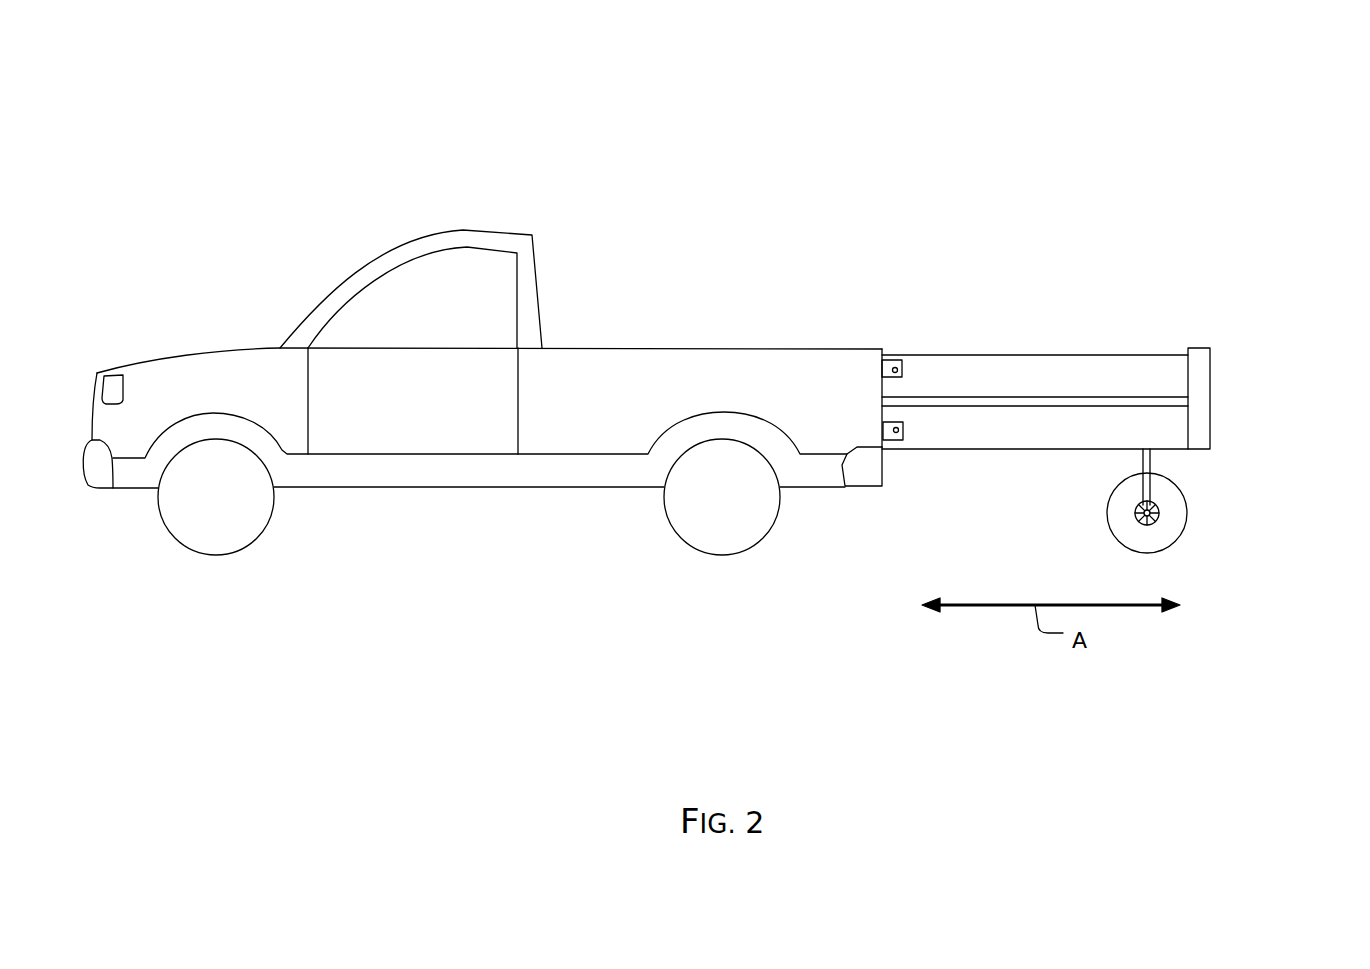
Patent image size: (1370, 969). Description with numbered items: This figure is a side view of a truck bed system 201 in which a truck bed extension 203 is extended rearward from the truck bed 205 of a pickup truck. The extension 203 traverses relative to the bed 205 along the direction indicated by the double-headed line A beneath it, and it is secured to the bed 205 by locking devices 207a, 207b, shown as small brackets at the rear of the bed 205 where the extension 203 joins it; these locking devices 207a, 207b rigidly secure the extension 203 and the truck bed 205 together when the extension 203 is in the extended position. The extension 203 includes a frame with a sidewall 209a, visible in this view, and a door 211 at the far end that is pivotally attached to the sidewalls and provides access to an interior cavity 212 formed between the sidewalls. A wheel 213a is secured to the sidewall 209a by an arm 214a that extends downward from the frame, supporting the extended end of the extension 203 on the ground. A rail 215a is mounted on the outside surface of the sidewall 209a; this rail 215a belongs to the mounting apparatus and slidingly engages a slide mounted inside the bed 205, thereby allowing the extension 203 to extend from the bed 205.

The truck bed system 201 is at (907, 130).
The truck bed extension 203 is at (1253, 250).
The truck bed 205 is at (652, 348).
The locking device 207a is at (896, 360).
The locking device 207b is at (893, 440).
The sidewall 209a is at (1133, 355).
The door 211 is at (1212, 397).
The interior cavity 212 is at (1013, 322).
The wheel 213a is at (1183, 510).
The arm 214a is at (1152, 463).
The rail 215a is at (1005, 408).